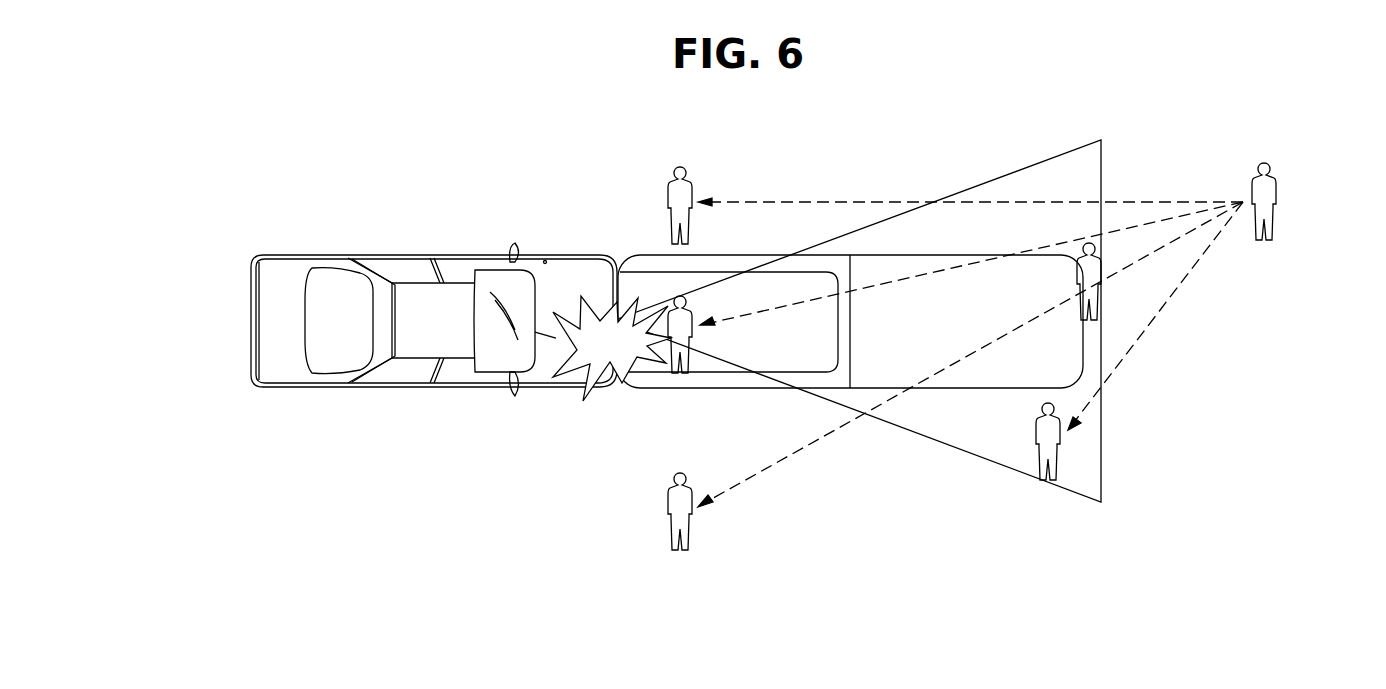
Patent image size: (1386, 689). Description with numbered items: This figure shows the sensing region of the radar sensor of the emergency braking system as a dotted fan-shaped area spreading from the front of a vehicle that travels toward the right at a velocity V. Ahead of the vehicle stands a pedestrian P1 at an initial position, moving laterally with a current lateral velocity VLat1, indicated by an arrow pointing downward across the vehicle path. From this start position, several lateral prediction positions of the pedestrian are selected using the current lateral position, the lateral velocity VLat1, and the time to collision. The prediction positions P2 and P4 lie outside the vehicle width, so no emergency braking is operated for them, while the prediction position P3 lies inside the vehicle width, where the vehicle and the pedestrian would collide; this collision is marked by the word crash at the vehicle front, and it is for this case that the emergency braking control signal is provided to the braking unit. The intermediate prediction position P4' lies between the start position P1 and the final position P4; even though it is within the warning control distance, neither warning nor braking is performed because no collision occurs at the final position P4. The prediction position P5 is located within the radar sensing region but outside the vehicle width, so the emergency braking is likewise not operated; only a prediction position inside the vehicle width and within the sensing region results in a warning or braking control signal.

The pedestrian (initial position) P1 is at (1275, 197).
The lateral prediction position P2 is at (691, 199).
The lateral prediction position inside vehicle width P3 is at (690, 327).
The lateral prediction position outside vehicle width P4 is at (690, 507).
The intermediate lateral prediction position P4' is at (1102, 279).
The lateral prediction position in sensing region outside vehicle width P5 is at (1057, 437).
The vehicle velocity V is at (220, 321).
The current lateral velocity of the moving object VLat1 is at (1263, 250).
The crash event crash is at (612, 348).